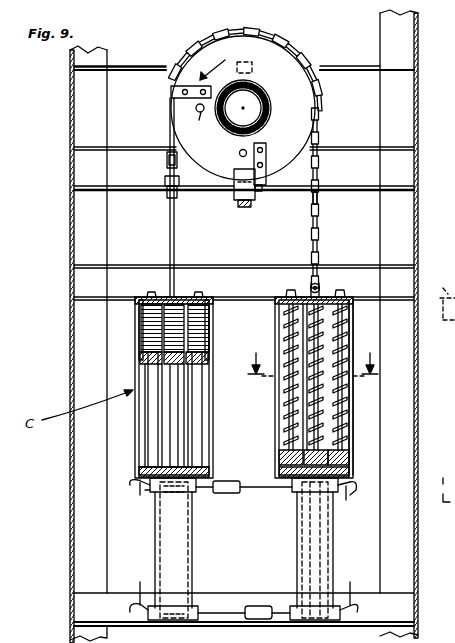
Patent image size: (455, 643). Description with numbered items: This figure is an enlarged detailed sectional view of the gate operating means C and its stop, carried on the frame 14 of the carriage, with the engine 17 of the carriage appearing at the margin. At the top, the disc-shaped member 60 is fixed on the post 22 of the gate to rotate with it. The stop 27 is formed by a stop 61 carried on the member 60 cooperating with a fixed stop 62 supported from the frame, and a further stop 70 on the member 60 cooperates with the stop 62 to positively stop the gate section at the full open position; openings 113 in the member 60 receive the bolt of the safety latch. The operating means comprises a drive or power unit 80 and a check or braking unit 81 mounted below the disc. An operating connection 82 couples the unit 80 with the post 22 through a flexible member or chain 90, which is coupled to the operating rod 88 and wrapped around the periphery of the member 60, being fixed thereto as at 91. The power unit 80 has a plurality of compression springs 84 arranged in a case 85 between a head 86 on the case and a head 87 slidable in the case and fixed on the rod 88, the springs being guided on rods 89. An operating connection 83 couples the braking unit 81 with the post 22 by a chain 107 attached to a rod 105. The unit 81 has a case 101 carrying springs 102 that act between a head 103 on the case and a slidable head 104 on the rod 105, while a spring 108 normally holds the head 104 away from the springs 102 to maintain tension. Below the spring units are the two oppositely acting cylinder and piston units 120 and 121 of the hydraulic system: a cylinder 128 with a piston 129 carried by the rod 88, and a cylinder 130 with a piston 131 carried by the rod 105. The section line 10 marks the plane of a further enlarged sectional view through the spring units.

The frame 14 is at (70, 167).
The post 22 is at (262, 78).
The stop 27 is at (262, 192).
The disc-shaped member 60 is at (300, 112).
The stop 61 is at (270, 164).
The fixed stop 62 is at (232, 197).
The stop 70 is at (183, 85).
The drive or power unit 80 is at (134, 454).
The check or braking unit 81 is at (355, 410).
The operating connection 82 is at (166, 172).
The operating connection 83 is at (322, 157).
The compression springs 84 is at (135, 345).
The case 85 is at (210, 404).
The head 86 is at (158, 292).
The head 87 is at (210, 358).
The operating rod 88 is at (176, 280).
The rods 89 is at (148, 408).
The flexible member or chain 90 is at (168, 132).
The fixing point 91 is at (330, 40).
The case 101 is at (355, 392).
The springs 102 is at (335, 332).
The head 103 is at (326, 288).
The head 104 is at (345, 448).
The rod 105 is at (330, 322).
The chain 107 is at (322, 218).
The spring 108 is at (310, 432).
The openings 113 is at (240, 153).
The cylinder and piston unit 120 is at (155, 540).
The cylinder and piston unit 121 is at (335, 572).
The cylinder 128 is at (193, 546).
The piston 129 is at (178, 500).
The cylinder 130 is at (335, 532).
The piston 131 is at (315, 598).
The section line 10 is at (313, 357).
The engine 17 is at (454, 308).